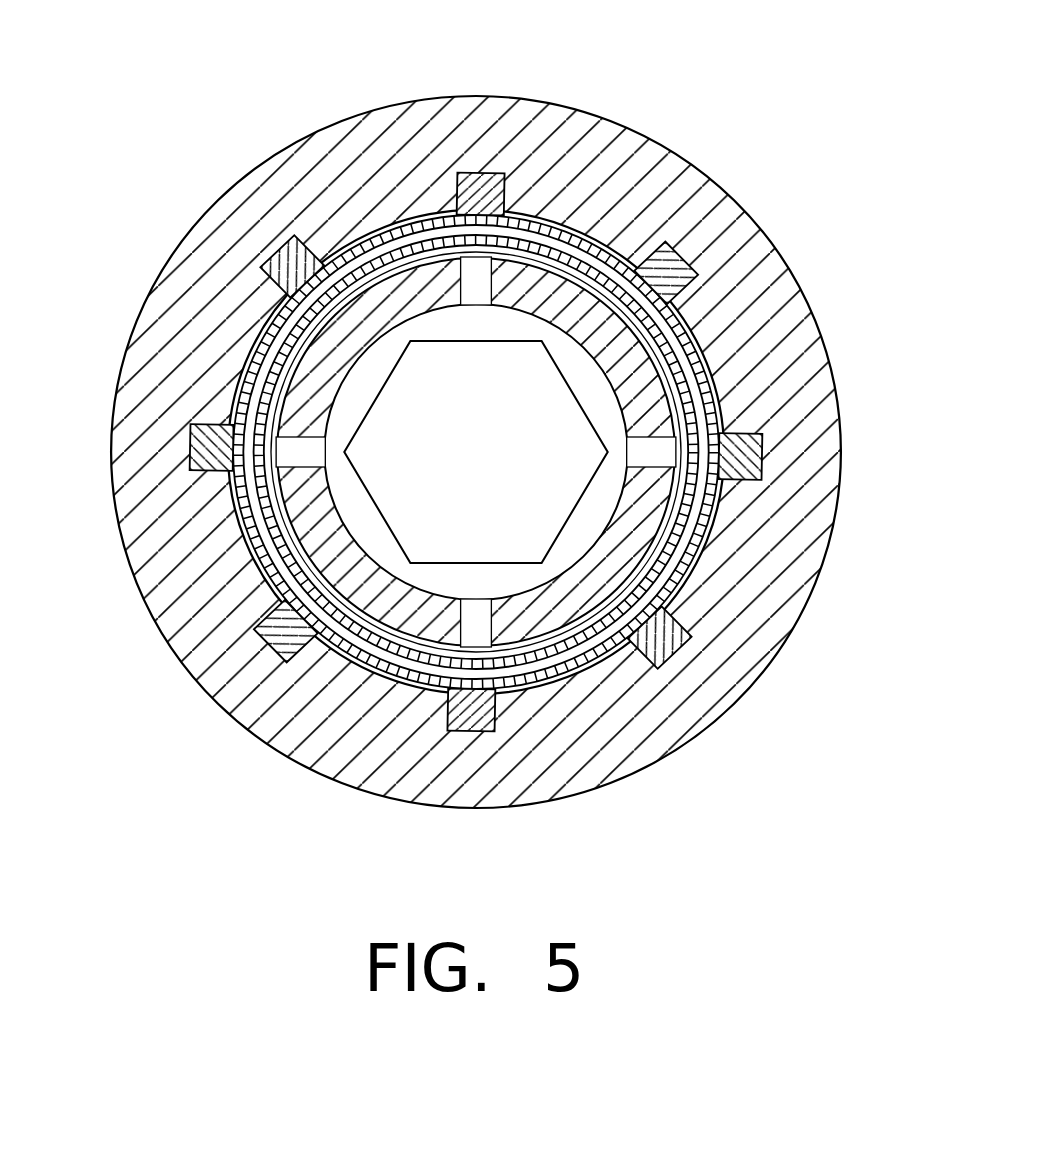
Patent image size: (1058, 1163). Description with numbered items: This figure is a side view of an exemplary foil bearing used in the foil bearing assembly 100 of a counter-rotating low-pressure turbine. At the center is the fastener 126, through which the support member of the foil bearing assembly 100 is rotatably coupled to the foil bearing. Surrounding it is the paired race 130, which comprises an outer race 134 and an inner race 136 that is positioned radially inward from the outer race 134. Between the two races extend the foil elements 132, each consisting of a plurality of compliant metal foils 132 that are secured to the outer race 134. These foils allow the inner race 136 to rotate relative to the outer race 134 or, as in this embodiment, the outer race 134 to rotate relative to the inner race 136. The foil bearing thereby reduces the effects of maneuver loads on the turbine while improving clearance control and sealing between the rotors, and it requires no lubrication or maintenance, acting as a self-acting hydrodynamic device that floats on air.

The foil bearing assembly 100 is at (478, 417).
The fastener 126 is at (506, 473).
The paired race 130 is at (735, 550).
The foil element 132 is at (360, 250).
The outer race 134 is at (710, 205).
The inner race 136 is at (333, 370).